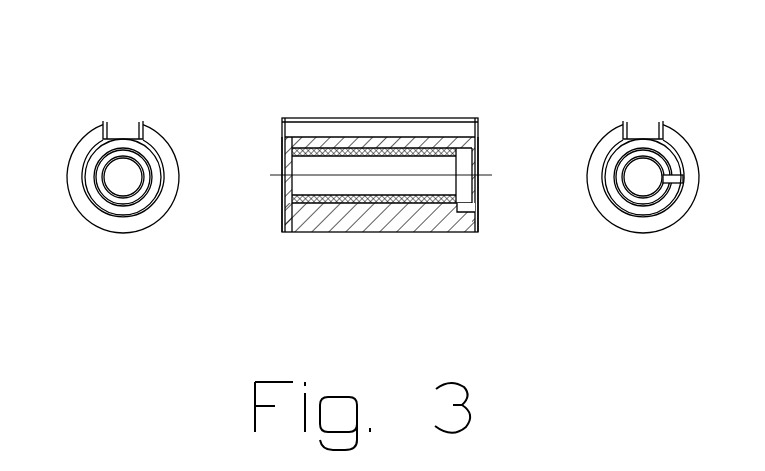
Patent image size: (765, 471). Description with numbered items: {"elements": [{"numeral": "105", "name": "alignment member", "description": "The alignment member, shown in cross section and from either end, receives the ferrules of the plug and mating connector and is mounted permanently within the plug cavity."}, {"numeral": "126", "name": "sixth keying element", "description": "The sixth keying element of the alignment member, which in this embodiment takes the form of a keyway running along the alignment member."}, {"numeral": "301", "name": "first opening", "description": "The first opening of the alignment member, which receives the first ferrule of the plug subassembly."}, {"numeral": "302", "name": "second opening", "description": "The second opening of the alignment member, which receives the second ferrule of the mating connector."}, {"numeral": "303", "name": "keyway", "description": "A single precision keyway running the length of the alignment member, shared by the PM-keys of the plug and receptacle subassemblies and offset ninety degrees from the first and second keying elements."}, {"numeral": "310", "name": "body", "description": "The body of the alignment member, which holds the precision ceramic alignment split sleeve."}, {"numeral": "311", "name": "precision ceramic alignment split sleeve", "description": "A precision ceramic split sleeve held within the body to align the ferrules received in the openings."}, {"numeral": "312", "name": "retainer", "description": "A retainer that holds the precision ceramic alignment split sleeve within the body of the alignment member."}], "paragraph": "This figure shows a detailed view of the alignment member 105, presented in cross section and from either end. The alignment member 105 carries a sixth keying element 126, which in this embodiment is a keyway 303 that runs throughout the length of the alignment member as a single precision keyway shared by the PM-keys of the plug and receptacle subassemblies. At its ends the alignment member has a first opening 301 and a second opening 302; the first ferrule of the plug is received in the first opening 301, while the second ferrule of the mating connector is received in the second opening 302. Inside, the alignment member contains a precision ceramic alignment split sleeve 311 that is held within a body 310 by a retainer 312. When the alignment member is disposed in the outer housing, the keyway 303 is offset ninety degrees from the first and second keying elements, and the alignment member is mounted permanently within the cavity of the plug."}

The coupling assembly 105 is at (371, 122).
The retaining clip 126 is at (393, 122).
The first end 301 is at (285, 168).
The second end 302 is at (475, 160).
The slotted ring 303 is at (122, 132).
The body 310 is at (305, 222).
The sleeve 311 is at (360, 200).
The keyway 312 is at (463, 212).